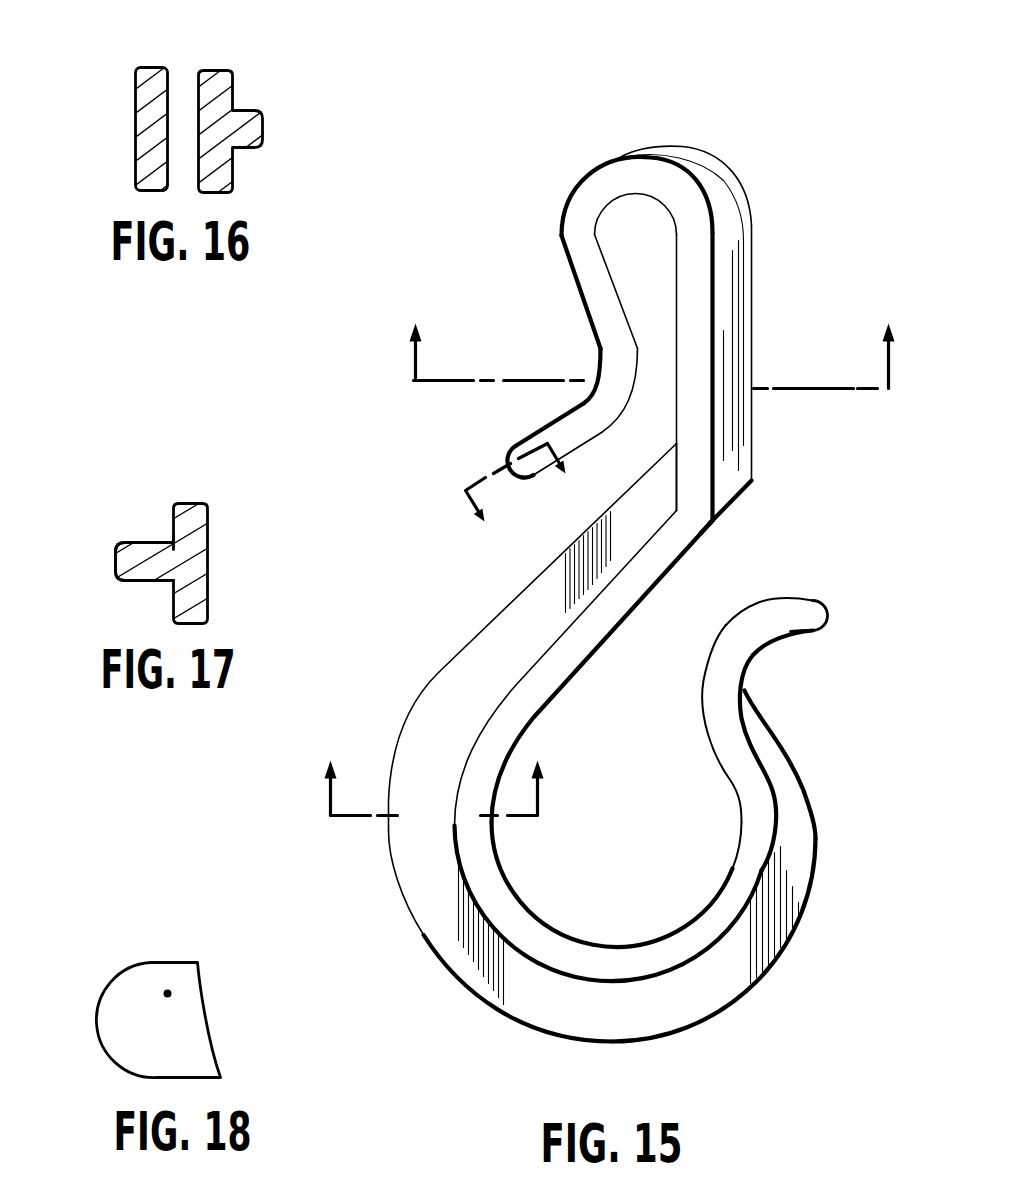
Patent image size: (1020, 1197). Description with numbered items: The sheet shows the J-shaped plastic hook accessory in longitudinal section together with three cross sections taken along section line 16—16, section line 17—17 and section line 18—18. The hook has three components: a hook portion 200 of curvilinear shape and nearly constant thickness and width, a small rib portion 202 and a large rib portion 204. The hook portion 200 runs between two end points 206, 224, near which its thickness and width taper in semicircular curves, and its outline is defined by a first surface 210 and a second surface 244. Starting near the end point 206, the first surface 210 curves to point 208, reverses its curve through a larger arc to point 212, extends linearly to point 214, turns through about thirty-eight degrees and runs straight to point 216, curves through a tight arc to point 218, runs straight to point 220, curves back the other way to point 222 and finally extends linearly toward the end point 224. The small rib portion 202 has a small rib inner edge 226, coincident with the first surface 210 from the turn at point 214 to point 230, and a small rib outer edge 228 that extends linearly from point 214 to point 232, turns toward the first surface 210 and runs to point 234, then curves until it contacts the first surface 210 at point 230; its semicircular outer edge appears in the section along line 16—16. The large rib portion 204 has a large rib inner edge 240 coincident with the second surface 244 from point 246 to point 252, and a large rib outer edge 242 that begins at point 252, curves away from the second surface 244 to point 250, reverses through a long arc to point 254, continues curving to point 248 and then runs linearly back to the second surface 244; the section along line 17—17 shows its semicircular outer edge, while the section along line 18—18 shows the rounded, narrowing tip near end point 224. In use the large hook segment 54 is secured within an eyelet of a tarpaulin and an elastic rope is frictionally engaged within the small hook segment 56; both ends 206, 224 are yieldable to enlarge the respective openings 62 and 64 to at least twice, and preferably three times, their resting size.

In FIG. 15, the large hook segment 54 is at (710, 947).
In FIG. 15, the small hook segment 56 is at (597, 195).
In FIG. 15, the opening 62 is at (695, 624).
In FIG. 15, the opening 64 is at (665, 358).
In FIG. 15, the hook portion 200 is at (580, 284).
In FIG. 15, the small rib portion 202 is at (720, 335).
In FIG. 15, the large rib portion 204 is at (424, 934).
In FIG. 15, the end point 206 is at (828, 614).
In FIG. 15, the point 208 is at (712, 748).
In FIG. 15, the first surface of the hook portion 210 is at (758, 590).
In FIG. 16, the first surface of the hook portion 210 is at (136, 95).
In FIG. 17, the first surface of the hook portion 210 is at (208, 542).
In FIG. 15, the point 212 is at (536, 718).
In FIG. 15, the point 214 is at (709, 522).
In FIG. 15, the point 216 is at (716, 232).
In FIG. 15, the point 218 is at (560, 257).
In FIG. 15, the point 220 is at (594, 338).
In FIG. 15, the point 222 is at (558, 417).
In FIG. 15, the end point 224 is at (508, 461).
In FIG. 18, the end point 224 is at (102, 1017).
In FIG. 15, the small rib inner edge 226 is at (700, 190).
In FIG. 15, the small rib outer edge 228 is at (690, 148).
In FIG. 16, the small rib outer edge 228 is at (263, 127).
In FIG. 15, the point 230 is at (609, 163).
In FIG. 15, the point 232 is at (752, 481).
In FIG. 15, the point 234 is at (752, 253).
In FIG. 15, the large rib inner edge 240 is at (583, 980).
In FIG. 17, the large rib inner edge 240 is at (172, 543).
In FIG. 15, the large rib outer edge 242 is at (617, 1041).
In FIG. 17, the large rib outer edge 242 is at (115, 560).
In FIG. 15, the second surface of the hook portion 244 is at (806, 636).
In FIG. 16, the second surface of the hook portion 244 is at (186, 82).
In FIG. 18, the second surface of the hook portion 244 is at (167, 993).
In FIG. 15, the point 246 is at (671, 444).
In FIG. 15, the point 248 is at (441, 668).
In FIG. 15, the point 250 is at (785, 740).
In FIG. 15, the point 252 is at (755, 658).
In FIG. 15, the point 254 is at (681, 1030).
In FIG. 15, the section line 16— 16 is at (654, 341).
In FIG. 15, the section line 17— 17 is at (437, 776).
In FIG. 15, the section line 18— 18 is at (527, 498).